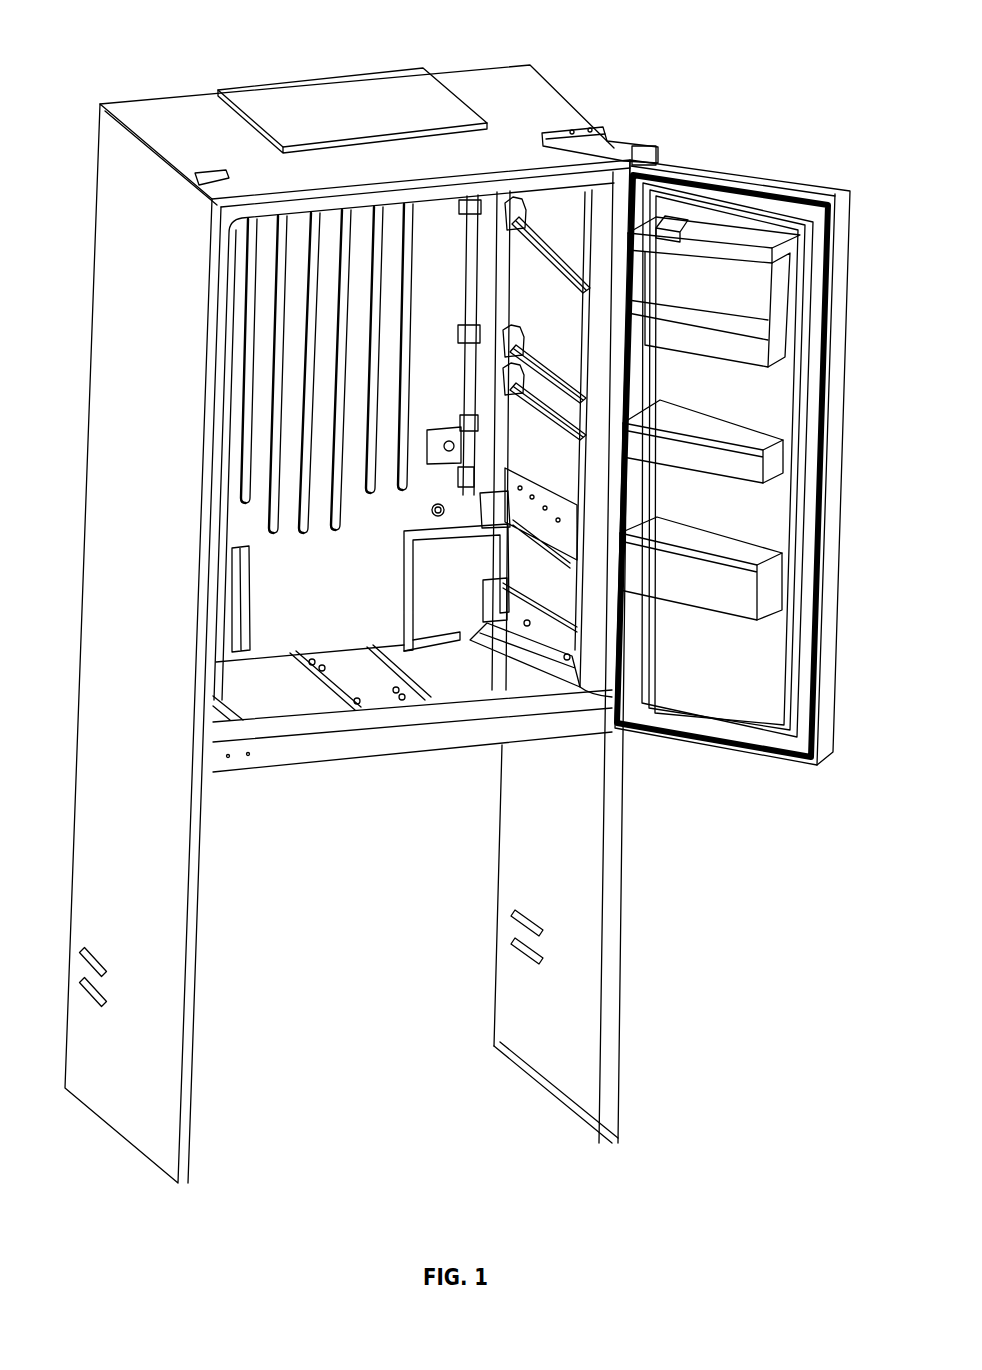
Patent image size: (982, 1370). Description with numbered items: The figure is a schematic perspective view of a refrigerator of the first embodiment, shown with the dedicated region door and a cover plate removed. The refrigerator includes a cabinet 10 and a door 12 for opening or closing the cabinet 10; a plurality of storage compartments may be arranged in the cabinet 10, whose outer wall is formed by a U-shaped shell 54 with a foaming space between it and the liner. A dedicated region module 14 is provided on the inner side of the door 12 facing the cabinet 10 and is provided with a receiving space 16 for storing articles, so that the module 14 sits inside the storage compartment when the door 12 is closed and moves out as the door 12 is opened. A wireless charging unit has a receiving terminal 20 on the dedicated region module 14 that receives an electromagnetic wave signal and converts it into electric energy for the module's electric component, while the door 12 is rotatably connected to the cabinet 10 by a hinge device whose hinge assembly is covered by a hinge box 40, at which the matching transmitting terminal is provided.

The cabinet 10 is at (158, 73).
The door 12 is at (840, 253).
The dedicated region module 14 is at (783, 197).
The receiving space 16 is at (723, 300).
The receiving terminal 20 is at (690, 183).
The hinge box 40 is at (607, 143).
The U-shaped shell 54 is at (106, 530).